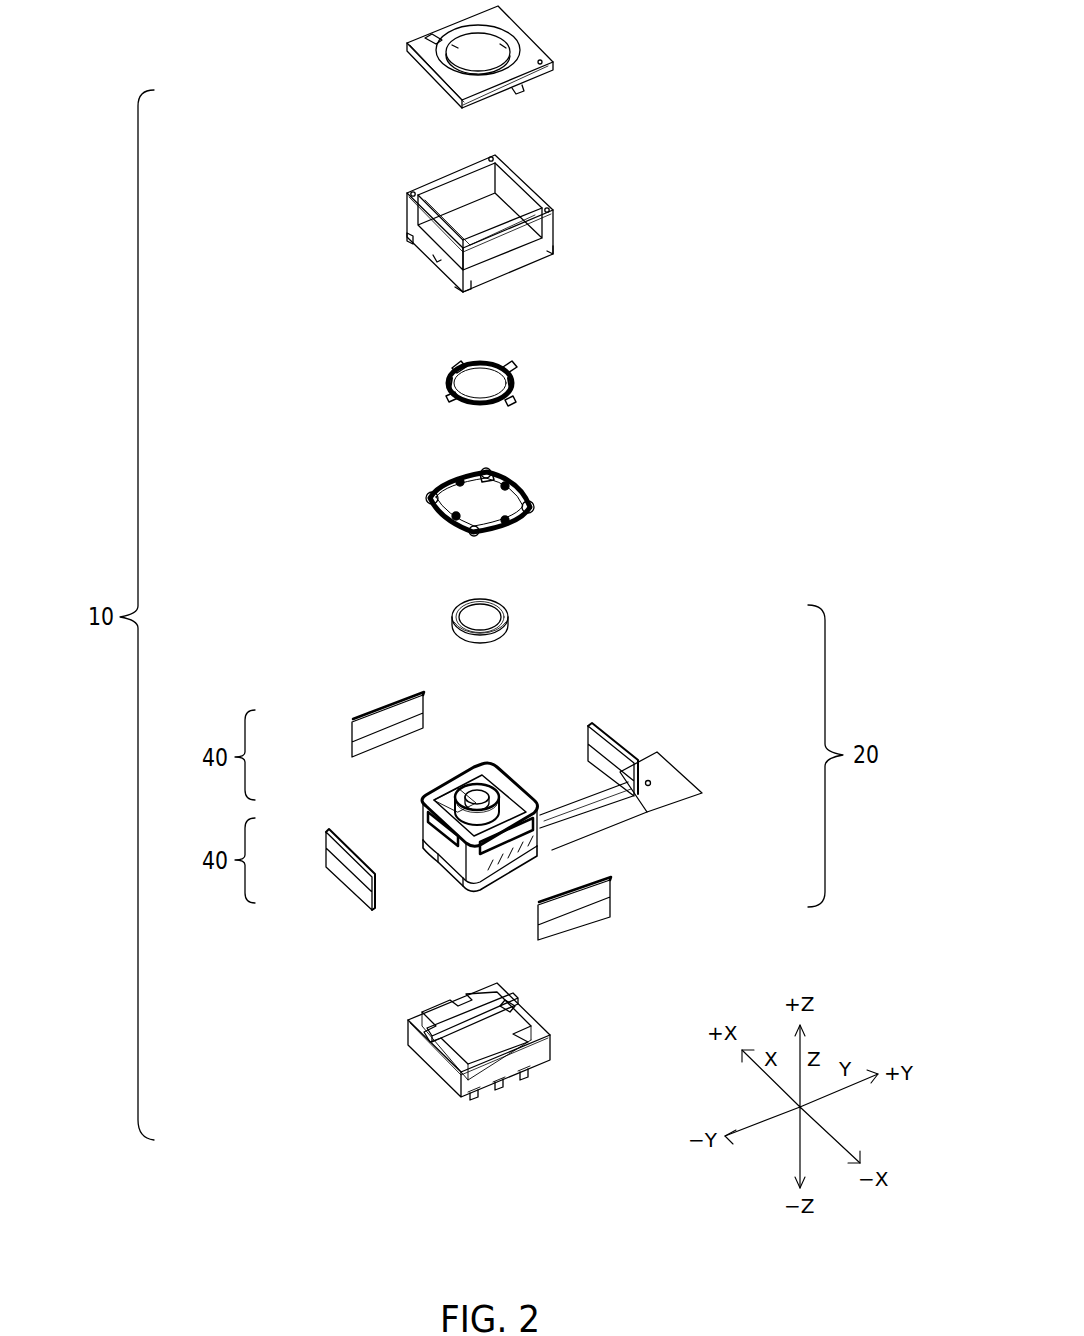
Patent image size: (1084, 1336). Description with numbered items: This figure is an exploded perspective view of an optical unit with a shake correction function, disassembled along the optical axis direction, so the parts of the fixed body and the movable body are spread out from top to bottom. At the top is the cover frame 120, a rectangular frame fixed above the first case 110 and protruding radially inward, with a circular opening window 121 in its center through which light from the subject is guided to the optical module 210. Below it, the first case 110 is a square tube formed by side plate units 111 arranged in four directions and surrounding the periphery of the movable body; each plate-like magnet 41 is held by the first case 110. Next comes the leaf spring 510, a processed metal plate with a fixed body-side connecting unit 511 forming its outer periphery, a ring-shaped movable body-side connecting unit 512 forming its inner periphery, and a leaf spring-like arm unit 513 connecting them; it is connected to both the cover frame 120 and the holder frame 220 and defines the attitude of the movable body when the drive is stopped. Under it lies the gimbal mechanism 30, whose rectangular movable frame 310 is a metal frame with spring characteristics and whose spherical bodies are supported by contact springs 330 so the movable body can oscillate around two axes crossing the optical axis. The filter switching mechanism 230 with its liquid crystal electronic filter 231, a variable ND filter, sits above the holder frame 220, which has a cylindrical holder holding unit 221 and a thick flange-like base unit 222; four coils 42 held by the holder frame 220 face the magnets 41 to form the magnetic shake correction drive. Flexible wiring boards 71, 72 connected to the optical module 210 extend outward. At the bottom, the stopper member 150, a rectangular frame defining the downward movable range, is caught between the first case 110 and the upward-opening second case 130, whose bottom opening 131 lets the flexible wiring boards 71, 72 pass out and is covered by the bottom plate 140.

The gimbal mechanism 30 is at (418, 494).
The magnet 41 is at (371, 712).
The coil 42 is at (528, 788).
The flexible wiring board 71 is at (614, 811).
The flexible wiring board 72 is at (572, 820).
The first case 110 is at (401, 208).
The side plate unit 111 is at (448, 190).
The cover frame 120 is at (401, 42).
The opening window 121 is at (500, 66).
The second case 130 is at (421, 1052).
The opening 131 is at (507, 1008).
The bottom plate 140 is at (461, 1100).
The stopper member 150 is at (410, 1017).
The optical module 210 is at (597, 769).
The holder frame 220 is at (528, 845).
The holder holding unit 221 is at (470, 786).
The base unit 222 is at (452, 786).
The filter switching mechanism 230 is at (515, 612).
The electronic filter 231 is at (470, 621).
The movable frame 310 is at (510, 522).
The contact spring 330 is at (440, 488).
The leaf spring 510 is at (517, 385).
The fixed body-side connecting unit 511 is at (508, 370).
The movable body-side connecting unit 512 is at (448, 373).
The arm unit 513 is at (445, 383).